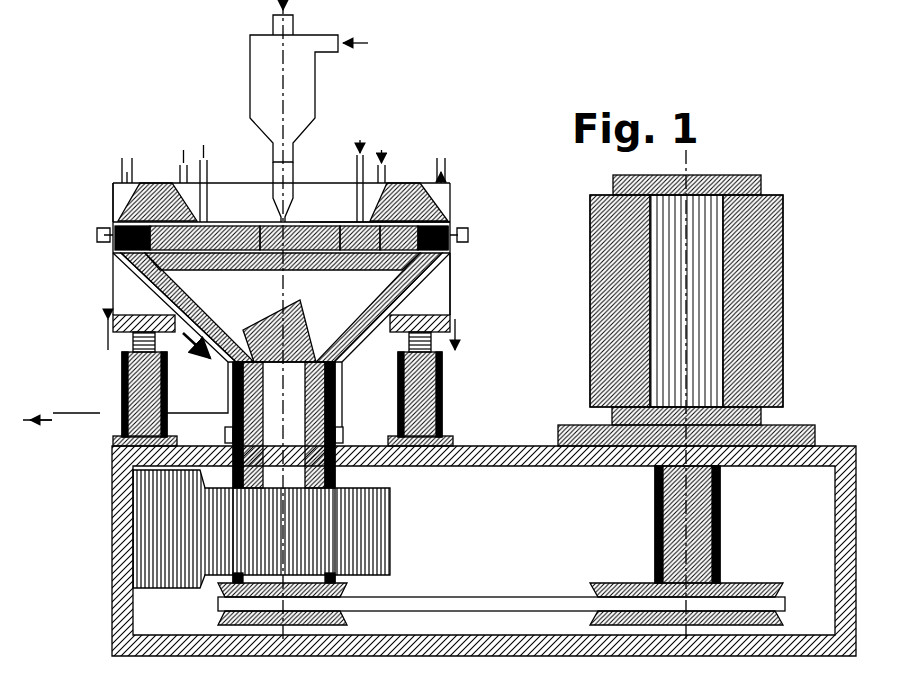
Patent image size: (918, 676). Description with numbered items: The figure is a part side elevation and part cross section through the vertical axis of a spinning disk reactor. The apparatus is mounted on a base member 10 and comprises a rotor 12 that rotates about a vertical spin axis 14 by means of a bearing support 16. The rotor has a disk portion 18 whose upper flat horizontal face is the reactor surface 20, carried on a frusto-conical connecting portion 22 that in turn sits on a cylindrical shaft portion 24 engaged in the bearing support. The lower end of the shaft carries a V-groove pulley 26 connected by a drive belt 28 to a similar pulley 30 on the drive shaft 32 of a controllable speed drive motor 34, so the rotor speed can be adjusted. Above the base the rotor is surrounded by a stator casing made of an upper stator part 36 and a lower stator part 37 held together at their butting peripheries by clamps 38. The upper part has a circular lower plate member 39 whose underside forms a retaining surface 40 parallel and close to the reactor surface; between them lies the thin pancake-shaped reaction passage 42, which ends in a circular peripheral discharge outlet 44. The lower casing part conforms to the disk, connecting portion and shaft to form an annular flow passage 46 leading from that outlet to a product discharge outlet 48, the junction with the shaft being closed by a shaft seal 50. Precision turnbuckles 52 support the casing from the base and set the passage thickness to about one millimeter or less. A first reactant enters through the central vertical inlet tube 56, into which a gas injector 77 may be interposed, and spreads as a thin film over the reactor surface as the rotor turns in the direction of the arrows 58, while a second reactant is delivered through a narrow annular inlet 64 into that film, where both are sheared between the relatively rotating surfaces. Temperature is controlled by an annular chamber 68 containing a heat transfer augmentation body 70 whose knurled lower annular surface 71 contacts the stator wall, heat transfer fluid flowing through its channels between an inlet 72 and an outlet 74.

The base member 10 is at (512, 466).
The rotor 12 is at (155, 266).
The vertical spin axis 14 is at (335, 306).
The bearing support 16 is at (380, 528).
The disk portion 18 is at (252, 238).
The reactor surface 20 is at (314, 228).
The frusto-conical connecting portion 22 is at (226, 344).
The cylindrical shaft portion 24 is at (337, 480).
The V-groove pulley 26 is at (340, 584).
The drive belt 28 is at (560, 597).
The pulley 30 is at (605, 585).
The drive shaft 32 is at (655, 519).
The controllable speed drive motor 34 is at (607, 332).
The upper stator part 36 is at (450, 192).
The lower stator part 37 is at (453, 262).
The clamps 38 is at (97, 232).
The circular lower plate member 39 is at (327, 222).
The retaining surface 40 is at (388, 228).
The reaction passage 42 is at (346, 228).
The peripheral discharge outlet 44 is at (453, 220).
The annular flow passage 46 is at (128, 270).
The product discharge outlet 48 is at (100, 412).
The shaft seal 50 is at (343, 430).
The precision turnbuckles 52 is at (122, 366).
The inlet tube 56 is at (296, 28).
The arrows 58 is at (233, 325).
The annular inlet 64 is at (205, 160).
The annular chamber 68 is at (114, 197).
The heat transfer augmentation body 70 is at (125, 212).
The lower annular surface 71 is at (420, 214).
The inlet 72 is at (181, 165).
The outlet 74 is at (132, 172).
The gas injector 77 is at (303, 98).